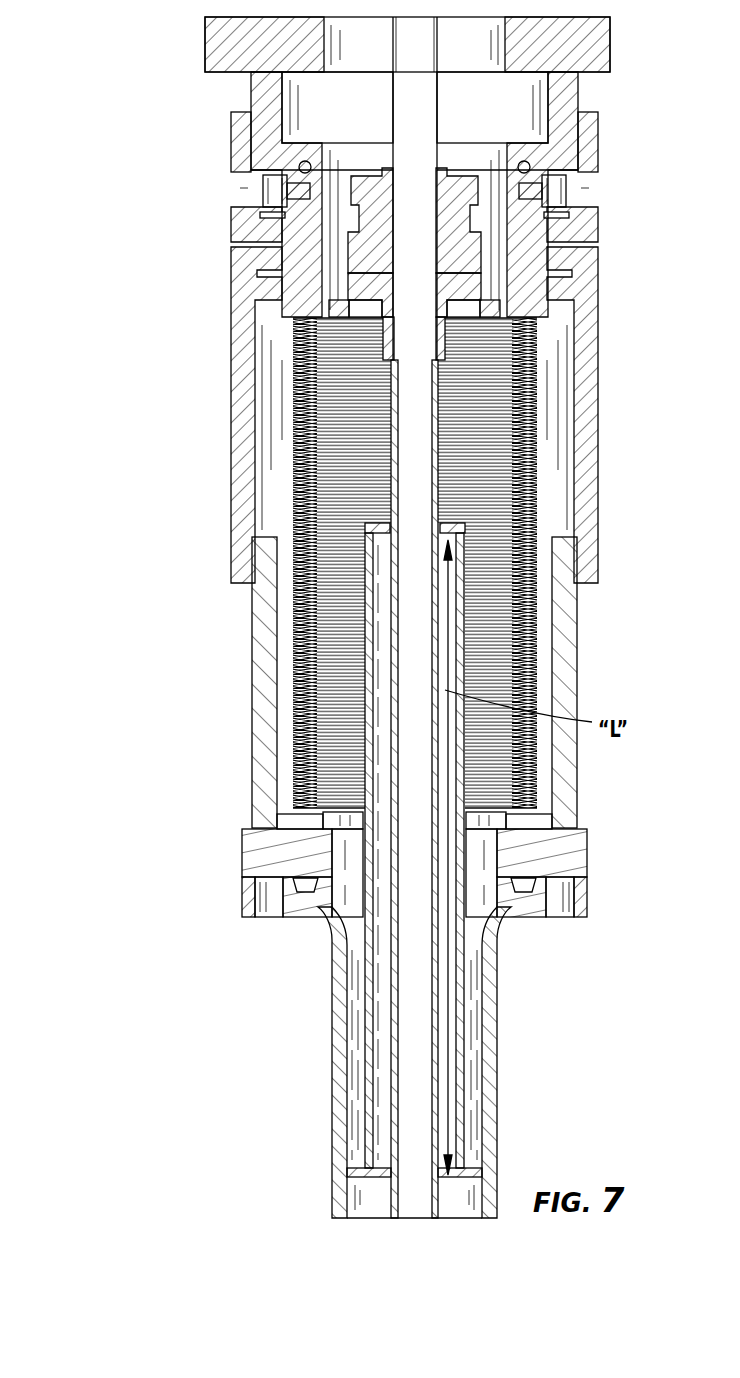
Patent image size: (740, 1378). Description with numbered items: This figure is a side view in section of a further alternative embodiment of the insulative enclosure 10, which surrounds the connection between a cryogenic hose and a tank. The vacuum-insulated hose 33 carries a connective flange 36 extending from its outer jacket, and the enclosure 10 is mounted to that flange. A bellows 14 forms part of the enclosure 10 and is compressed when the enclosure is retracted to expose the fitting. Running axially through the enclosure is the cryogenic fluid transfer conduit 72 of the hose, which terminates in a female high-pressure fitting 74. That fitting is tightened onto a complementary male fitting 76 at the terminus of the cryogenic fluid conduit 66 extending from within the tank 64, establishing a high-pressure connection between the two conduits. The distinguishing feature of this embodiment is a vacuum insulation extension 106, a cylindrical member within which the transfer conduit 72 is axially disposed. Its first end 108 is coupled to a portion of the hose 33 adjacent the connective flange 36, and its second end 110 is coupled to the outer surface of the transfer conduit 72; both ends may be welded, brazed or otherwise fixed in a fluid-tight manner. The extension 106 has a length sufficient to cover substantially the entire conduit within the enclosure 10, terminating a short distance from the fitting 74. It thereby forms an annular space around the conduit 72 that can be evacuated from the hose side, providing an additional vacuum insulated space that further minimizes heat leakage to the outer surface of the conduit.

The enclosure 10 is at (130, 214).
The bellows 14 is at (530, 543).
The vacuum-insulated hose 33 is at (330, 1085).
The connective flange 36 is at (527, 913).
The tank 64 is at (205, 55).
The cryogenic fluid conduit 66 is at (410, 101).
The cryogenic fluid transfer conduit 72 is at (430, 456).
The high-pressure fitting 74 is at (462, 288).
The male fitting 76 is at (462, 243).
The vacuum insulation extension 106 is at (370, 633).
The first end 108 is at (363, 1175).
The second end 110 is at (373, 530).